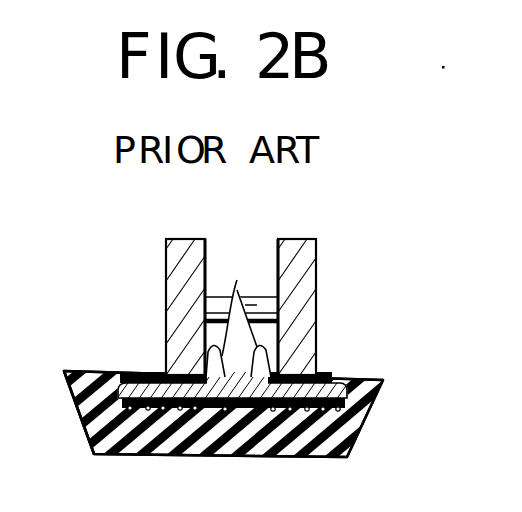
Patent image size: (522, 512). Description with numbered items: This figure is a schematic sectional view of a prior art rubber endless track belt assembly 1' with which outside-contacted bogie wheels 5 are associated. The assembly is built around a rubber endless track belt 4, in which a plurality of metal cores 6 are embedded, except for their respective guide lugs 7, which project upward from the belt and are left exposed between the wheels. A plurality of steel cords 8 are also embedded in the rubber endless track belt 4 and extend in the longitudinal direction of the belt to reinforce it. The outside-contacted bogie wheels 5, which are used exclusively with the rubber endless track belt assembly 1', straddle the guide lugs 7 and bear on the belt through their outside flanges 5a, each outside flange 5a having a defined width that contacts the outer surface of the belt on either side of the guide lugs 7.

The rubber endless track belt assembly 1' is at (238, 393).
The rubber endless track belt 4 is at (95, 378).
The outside-contacted bogie wheels 5 is at (314, 228).
The outside flange 5a is at (165, 290).
The metal cores 6 is at (238, 412).
The guide lugs 7 is at (237, 296).
The steel cords 8 is at (365, 411).